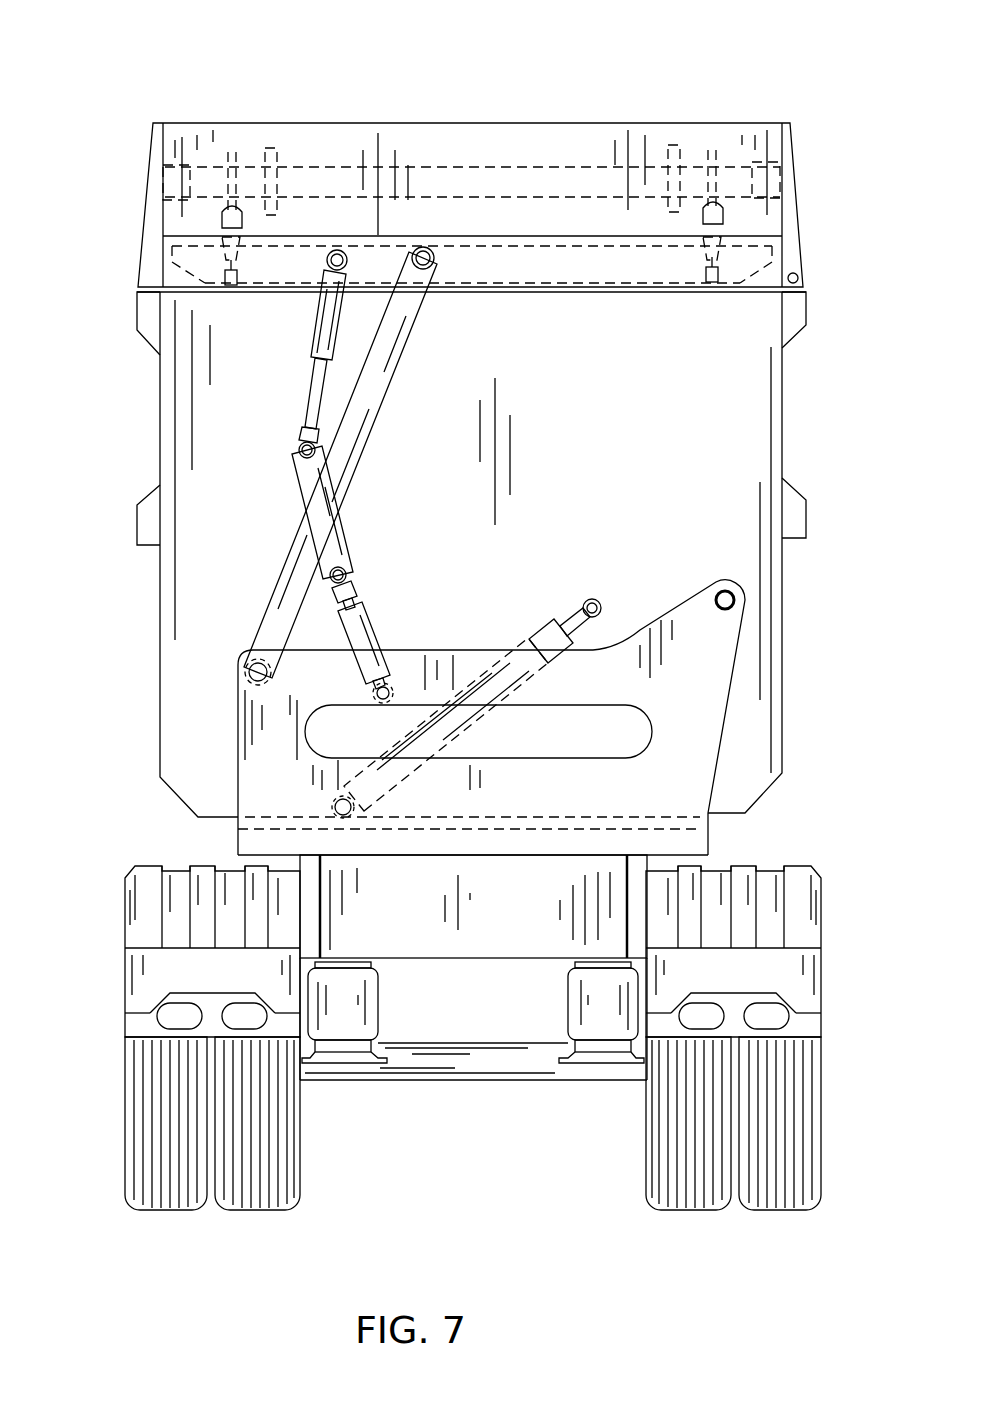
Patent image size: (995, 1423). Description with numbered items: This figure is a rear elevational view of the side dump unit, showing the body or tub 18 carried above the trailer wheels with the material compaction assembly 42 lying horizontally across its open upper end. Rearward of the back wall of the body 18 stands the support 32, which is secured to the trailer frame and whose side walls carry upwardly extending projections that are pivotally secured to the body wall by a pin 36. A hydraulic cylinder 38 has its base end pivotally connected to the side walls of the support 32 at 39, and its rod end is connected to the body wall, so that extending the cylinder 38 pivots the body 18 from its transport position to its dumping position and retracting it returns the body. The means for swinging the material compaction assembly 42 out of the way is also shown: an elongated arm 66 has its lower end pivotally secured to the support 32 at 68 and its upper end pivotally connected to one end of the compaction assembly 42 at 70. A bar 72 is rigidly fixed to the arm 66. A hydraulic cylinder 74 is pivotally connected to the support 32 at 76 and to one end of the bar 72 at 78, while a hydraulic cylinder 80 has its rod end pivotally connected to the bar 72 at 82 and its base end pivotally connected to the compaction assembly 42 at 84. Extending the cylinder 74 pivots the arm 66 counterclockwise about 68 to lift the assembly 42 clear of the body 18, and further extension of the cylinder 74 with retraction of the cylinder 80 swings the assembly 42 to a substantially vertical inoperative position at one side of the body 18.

The body or tub 18 is at (160, 371).
The support 32 is at (485, 648).
The pin 36 is at (735, 600).
The hydraulic cylinder 38 is at (538, 630).
The pivotal connection of cylinder base end 39 is at (335, 803).
The material compaction assembly 42 is at (443, 121).
The elongated arm 66 is at (385, 365).
The lower pivot of arm 68 is at (250, 667).
The upper pivot of arm 70 is at (434, 262).
The bar 72 is at (332, 528).
The hydraulic cylinder 74 is at (362, 618).
The pivot of cylinder on support 76 is at (392, 692).
The pivot of cylinder on bar 78 is at (346, 572).
The hydraulic cylinder 80 is at (332, 312).
The pivot of cylinder rod end on bar 82 is at (298, 447).
The pivot of cylinder base end on compaction assembly 84 is at (334, 250).